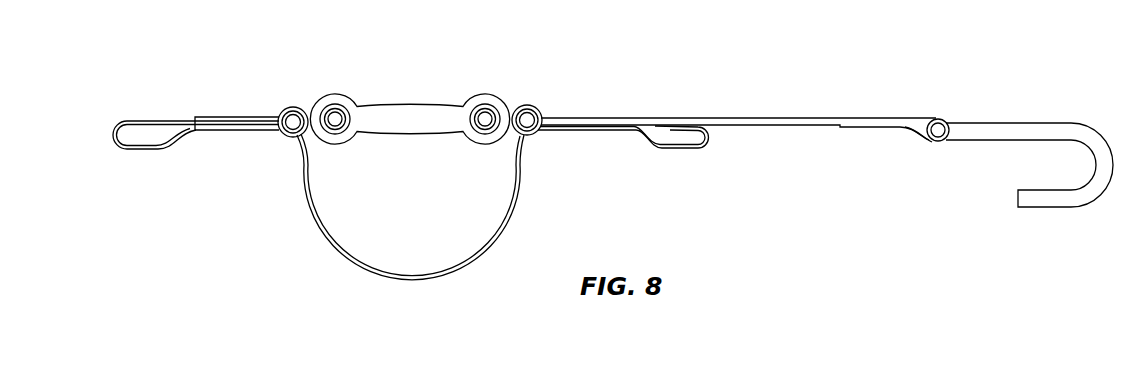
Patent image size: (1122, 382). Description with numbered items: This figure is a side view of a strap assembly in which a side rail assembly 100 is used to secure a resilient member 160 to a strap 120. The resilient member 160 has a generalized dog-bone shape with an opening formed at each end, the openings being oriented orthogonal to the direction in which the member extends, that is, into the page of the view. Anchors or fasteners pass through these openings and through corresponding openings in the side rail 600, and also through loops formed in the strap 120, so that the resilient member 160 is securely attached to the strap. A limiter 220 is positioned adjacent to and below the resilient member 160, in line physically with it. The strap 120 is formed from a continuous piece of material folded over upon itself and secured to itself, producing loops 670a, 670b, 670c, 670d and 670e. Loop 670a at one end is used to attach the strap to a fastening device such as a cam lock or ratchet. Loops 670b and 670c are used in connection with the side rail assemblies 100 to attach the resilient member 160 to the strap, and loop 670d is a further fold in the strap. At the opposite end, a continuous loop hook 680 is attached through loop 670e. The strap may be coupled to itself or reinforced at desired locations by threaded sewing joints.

The side rail assembly 100 is at (429, 79).
The strap 120 is at (723, 119).
The resilient member 160 is at (386, 105).
The limiter 220 is at (478, 247).
The side rail 600 is at (529, 103).
The loop 670a is at (155, 124).
The loop 670b is at (276, 144).
The loop 670c is at (551, 142).
The loop 670d is at (690, 152).
The loop 670e is at (914, 156).
The continuous loop hook 680 is at (995, 125).